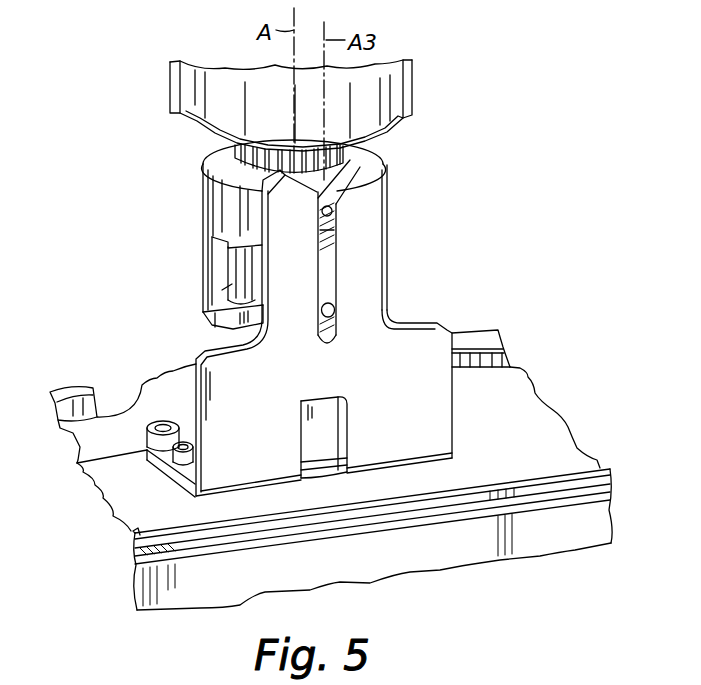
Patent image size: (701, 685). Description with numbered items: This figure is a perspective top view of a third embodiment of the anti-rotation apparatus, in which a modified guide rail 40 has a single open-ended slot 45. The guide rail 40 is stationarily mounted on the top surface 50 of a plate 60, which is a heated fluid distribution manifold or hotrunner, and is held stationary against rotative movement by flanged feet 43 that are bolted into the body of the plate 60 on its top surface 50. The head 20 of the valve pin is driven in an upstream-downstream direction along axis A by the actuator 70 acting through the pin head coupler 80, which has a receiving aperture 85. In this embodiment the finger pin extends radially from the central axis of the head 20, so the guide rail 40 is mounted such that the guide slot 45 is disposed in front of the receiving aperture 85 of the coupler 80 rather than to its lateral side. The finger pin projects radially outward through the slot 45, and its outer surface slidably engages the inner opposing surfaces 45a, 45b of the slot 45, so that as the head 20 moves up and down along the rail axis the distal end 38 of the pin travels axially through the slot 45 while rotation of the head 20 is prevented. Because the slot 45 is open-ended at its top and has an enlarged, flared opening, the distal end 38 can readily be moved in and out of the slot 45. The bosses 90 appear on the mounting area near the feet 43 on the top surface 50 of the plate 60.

The actuator 70 is at (168, 88).
The pin head coupler 80 is at (203, 198).
The head 20 is at (238, 268).
The receiving aperture 85 is at (224, 288).
The guide slot 45 is at (337, 322).
The inner opposing surface of the slot 45a is at (336, 212).
The inner opposing surface of the slot 45b is at (336, 225).
The distal end of the finger pin 38 is at (335, 301).
The guide rail 40 is at (449, 332).
The mounting bosses 90 is at (187, 423).
The flanged feet 43 is at (77, 463).
The top surface 50 is at (166, 506).
The plate 60 is at (133, 531).